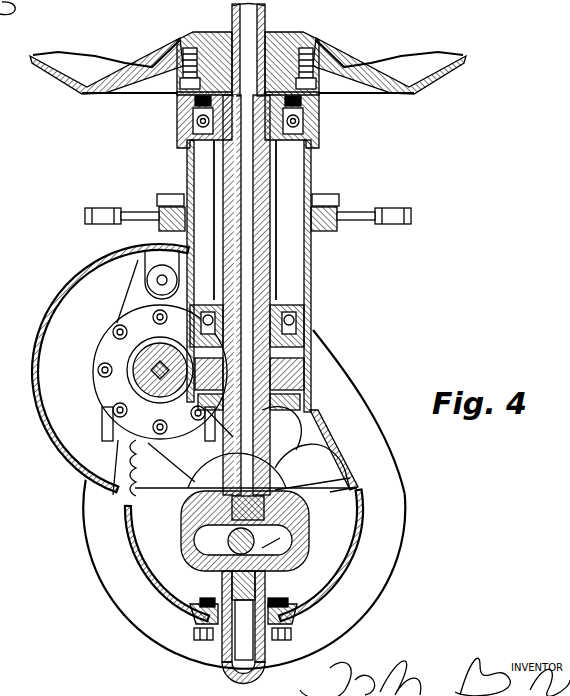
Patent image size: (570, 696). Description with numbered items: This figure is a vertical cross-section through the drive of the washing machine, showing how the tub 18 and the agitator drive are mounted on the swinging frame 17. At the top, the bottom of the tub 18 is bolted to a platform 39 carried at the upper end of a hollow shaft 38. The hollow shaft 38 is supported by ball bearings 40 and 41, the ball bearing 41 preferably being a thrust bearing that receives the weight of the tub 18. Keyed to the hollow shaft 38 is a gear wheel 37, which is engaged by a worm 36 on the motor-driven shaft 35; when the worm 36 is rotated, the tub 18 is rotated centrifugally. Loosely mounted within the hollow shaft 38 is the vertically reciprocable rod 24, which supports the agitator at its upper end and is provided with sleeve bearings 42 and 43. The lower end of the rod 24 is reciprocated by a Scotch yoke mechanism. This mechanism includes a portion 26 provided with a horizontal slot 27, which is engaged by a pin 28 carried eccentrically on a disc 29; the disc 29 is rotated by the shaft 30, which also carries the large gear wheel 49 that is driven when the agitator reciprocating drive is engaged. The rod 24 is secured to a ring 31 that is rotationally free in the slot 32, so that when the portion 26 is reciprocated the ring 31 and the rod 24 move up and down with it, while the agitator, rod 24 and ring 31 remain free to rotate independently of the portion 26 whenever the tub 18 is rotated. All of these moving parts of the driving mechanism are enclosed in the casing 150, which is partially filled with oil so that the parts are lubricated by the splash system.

The swinging frame 17 is at (352, 216).
The tub 18 is at (440, 72).
The vertically reciprocable rod 24 is at (262, 442).
The portion 26 is at (306, 530).
The horizontal slot 27 is at (290, 566).
The pin 28 is at (214, 575).
The disc 29 is at (213, 482).
The shaft 30 is at (267, 468).
The ring 31 is at (290, 487).
The slot 32 is at (346, 488).
The shaft 35 is at (145, 362).
The worm 36 is at (130, 383).
The gear wheel 37 is at (310, 360).
The hollow shaft 38 is at (272, 296).
The platform 39 is at (312, 82).
The ball bearing 40 is at (318, 124).
The ball bearing 41 is at (282, 330).
The sleeve bearing 42 is at (287, 363).
The sleeve bearing 43 is at (268, 34).
The large gear wheel 49 is at (110, 462).
The casing 150 is at (322, 421).